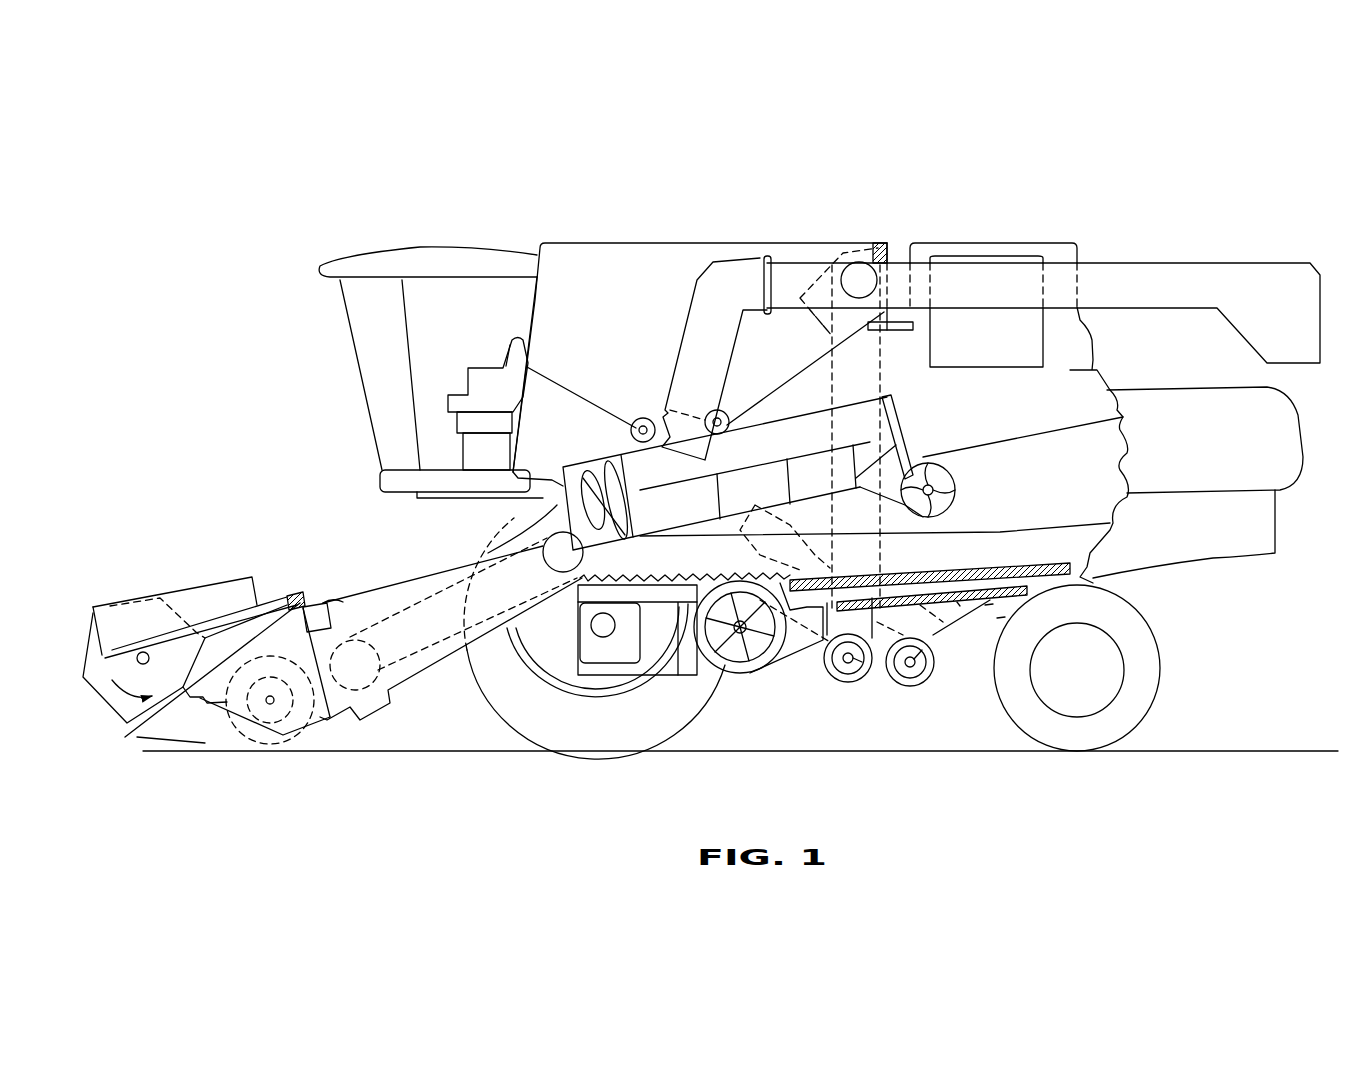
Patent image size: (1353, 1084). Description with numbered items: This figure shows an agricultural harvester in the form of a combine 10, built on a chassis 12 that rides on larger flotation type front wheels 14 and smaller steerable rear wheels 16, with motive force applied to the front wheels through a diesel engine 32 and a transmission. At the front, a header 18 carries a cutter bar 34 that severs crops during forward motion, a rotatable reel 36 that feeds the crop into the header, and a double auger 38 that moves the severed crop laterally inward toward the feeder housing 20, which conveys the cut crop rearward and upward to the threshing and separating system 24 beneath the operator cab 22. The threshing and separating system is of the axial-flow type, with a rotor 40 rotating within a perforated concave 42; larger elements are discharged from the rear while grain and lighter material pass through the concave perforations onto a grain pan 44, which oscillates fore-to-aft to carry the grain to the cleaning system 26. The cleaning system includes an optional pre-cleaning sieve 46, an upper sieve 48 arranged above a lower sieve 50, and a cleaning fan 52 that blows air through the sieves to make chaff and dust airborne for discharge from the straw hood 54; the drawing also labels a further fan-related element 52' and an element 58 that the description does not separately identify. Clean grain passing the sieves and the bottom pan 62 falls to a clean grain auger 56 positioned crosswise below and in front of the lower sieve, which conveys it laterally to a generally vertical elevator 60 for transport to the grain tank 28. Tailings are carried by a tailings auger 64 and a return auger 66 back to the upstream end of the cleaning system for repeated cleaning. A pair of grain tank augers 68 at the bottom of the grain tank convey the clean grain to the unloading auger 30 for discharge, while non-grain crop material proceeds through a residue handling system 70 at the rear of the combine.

The combine 10 is at (418, 233).
The chassis 12 is at (1093, 583).
The front wheels 14 is at (500, 712).
The rear wheels 16 is at (1153, 690).
The header 18 is at (179, 575).
The feeder housing 20 is at (396, 583).
The operator cab 22 is at (350, 350).
The threshing and separating system 24 is at (497, 521).
The cleaning system 26 is at (800, 683).
The grain tank 28 is at (594, 252).
The unloading auger 30 is at (1172, 272).
The diesel engine 32 is at (982, 243).
The cutter bar 34 is at (216, 745).
The rotatable reel 36 is at (96, 640).
The double auger 38 is at (277, 725).
The rotor 40 is at (581, 455).
The concave 42 is at (782, 440).
The grain pan 44 is at (568, 600).
The pre-cleaning sieve 46 is at (887, 578).
The upper sieve 48 is at (990, 575).
The lower sieve 50 is at (957, 602).
The cleaning fan 52 is at (740, 664).
The fan air stream 52' is at (756, 692).
The straw hood 54 is at (1290, 428).
The clean grain auger 56 is at (848, 682).
The sieve drive linkage 58 is at (990, 607).
The elevator 60 is at (880, 372).
The bottom pan 62 is at (1000, 620).
The tailings auger 64 is at (906, 687).
The return auger 66 is at (817, 542).
The grain tank augers 68 is at (640, 424).
The residue handling system 70 is at (1242, 570).